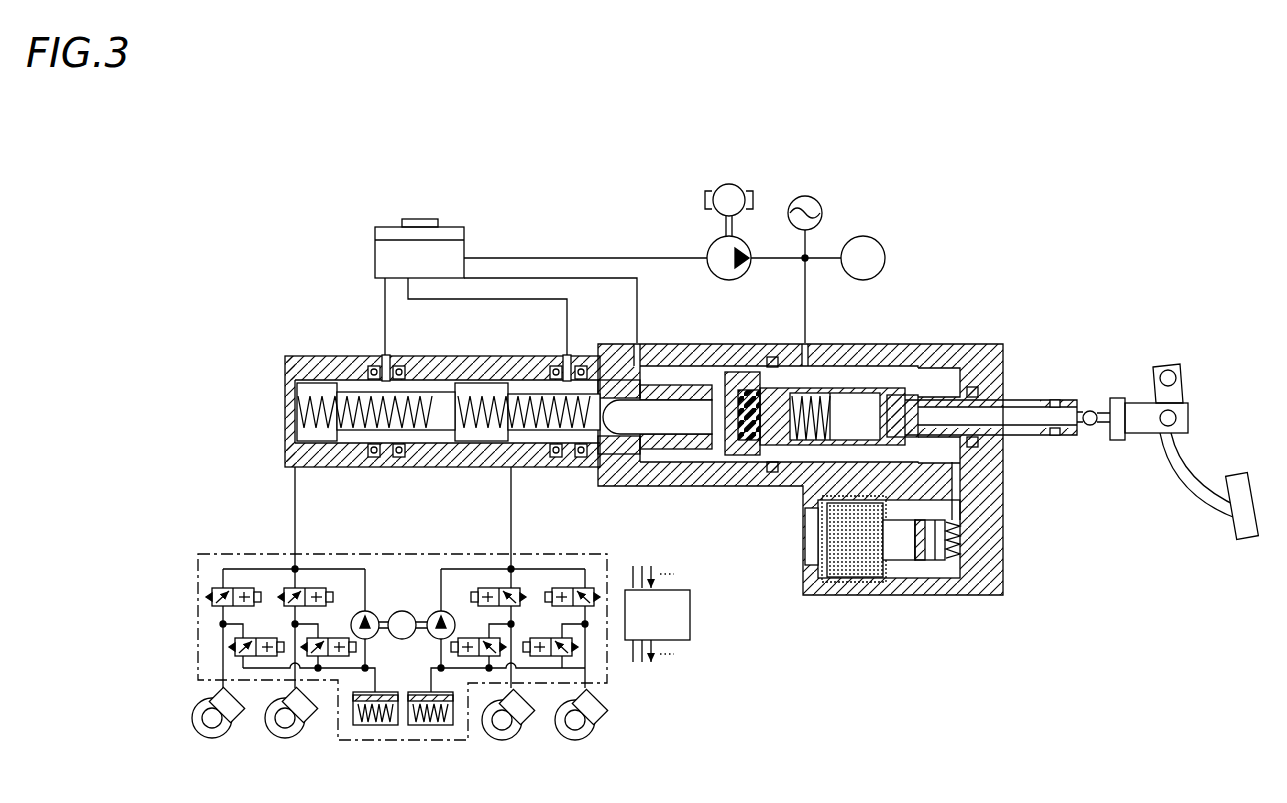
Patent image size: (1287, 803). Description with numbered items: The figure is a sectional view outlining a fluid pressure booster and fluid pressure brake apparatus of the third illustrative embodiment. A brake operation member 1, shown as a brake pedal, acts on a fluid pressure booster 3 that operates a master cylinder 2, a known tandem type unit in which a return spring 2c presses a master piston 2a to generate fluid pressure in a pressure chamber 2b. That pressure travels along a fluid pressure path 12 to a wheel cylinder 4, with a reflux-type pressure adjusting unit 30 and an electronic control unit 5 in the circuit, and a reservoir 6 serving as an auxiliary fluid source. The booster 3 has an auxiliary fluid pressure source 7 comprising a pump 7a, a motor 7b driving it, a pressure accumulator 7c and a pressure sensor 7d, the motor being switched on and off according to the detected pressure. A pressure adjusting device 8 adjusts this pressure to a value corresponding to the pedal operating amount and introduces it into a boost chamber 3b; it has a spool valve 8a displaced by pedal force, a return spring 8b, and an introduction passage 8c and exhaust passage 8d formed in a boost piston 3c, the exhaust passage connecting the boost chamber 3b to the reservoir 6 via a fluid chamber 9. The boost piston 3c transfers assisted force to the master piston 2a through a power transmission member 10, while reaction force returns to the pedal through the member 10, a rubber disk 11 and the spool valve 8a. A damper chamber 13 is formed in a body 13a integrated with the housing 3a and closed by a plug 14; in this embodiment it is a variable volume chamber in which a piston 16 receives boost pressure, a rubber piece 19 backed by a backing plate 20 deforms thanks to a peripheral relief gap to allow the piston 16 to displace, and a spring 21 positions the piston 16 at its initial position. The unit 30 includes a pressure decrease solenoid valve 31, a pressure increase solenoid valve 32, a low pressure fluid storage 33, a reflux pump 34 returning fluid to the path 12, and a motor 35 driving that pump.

The brake operation member 1 is at (1245, 490).
The master cylinder 2 is at (473, 400).
The master piston 2a is at (425, 382).
The pressure chamber 2b is at (318, 440).
The return spring 2c is at (300, 413).
The fluid pressure booster 3 is at (839, 474).
The housing 3a is at (1000, 368).
The boost chamber 3b is at (960, 375).
The boost piston 3c is at (905, 465).
The wheel cylinder 4 is at (243, 718).
The electronic control unit 5 is at (692, 611).
The reservoir 6 is at (456, 233).
The auxiliary fluid pressure source 7 is at (776, 199).
The pump 7a is at (706, 244).
The motor 7b is at (725, 184).
The pressure accumulator 7c is at (814, 198).
The pressure sensor 7d is at (876, 238).
The pressure adjusting device 8 is at (891, 415).
The spool valve 8a is at (910, 437).
The return spring 8b is at (770, 357).
The introduction passage 8c is at (880, 372).
The exhaust passage 8d is at (777, 470).
The fluid chamber 9 is at (632, 476).
The power transmission member 10 is at (684, 455).
The rubber disk 11 is at (748, 445).
The fluid pressure path 12 is at (300, 533).
The damper chamber 13 is at (930, 573).
The body 13a is at (985, 575).
The plug 14 is at (812, 566).
The piston 16 is at (925, 560).
The rubber piece 19 is at (850, 583).
The backing plate 20 is at (880, 560).
The spring 21 is at (958, 538).
The reflux-type pressure adjusting unit 30 is at (387, 629).
The pressure decrease solenoid valve 31 is at (238, 646).
The pressure increase solenoid valve 32 is at (215, 592).
The low pressure fluid storage 33 is at (418, 727).
The reflux pump 34 is at (368, 610).
The motor 35 is at (406, 610).